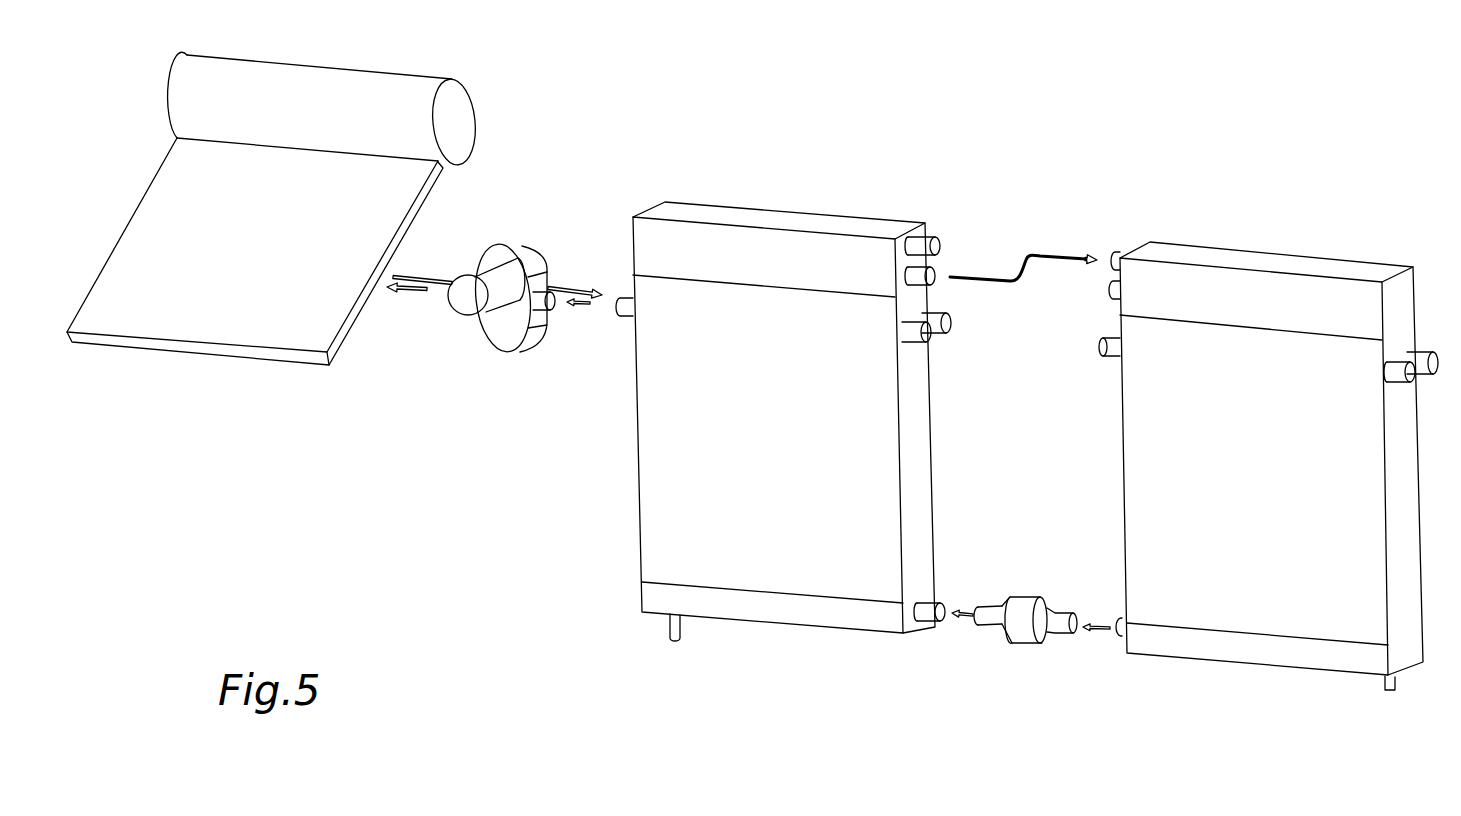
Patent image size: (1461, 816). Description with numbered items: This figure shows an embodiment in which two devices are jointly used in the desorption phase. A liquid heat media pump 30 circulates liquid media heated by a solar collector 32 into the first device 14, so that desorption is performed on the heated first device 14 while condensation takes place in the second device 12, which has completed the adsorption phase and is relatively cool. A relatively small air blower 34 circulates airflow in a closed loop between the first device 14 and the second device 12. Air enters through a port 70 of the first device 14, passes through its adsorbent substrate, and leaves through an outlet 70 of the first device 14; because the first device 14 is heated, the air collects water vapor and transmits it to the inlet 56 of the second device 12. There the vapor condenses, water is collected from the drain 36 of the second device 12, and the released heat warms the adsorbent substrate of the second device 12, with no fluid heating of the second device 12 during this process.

The second device 12 is at (1297, 213).
The first device 14 is at (810, 173).
The liquid heat media pump 30 is at (527, 248).
The solar collector 32 is at (427, 80).
The air blower 34 is at (1020, 595).
The drain pipe 36 is at (1387, 690).
The inlet 56 is at (930, 238).
The port 70 is at (938, 283).